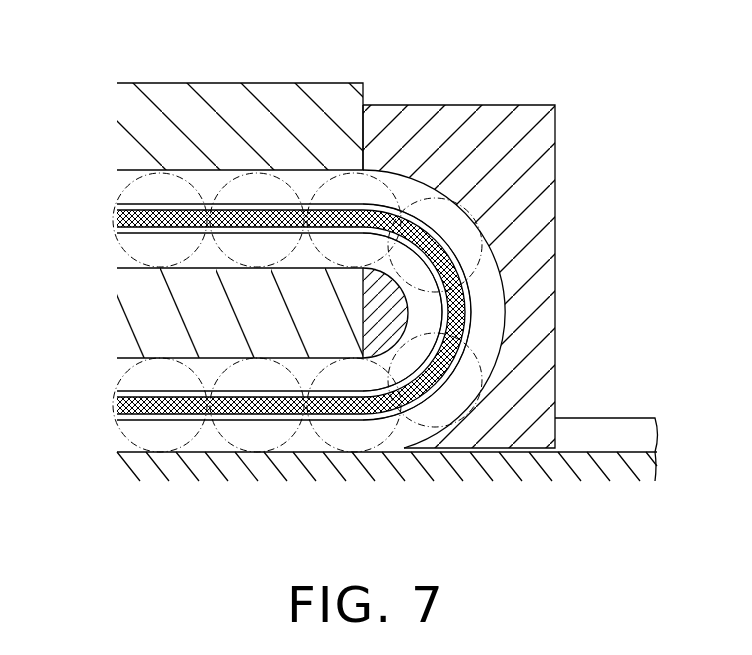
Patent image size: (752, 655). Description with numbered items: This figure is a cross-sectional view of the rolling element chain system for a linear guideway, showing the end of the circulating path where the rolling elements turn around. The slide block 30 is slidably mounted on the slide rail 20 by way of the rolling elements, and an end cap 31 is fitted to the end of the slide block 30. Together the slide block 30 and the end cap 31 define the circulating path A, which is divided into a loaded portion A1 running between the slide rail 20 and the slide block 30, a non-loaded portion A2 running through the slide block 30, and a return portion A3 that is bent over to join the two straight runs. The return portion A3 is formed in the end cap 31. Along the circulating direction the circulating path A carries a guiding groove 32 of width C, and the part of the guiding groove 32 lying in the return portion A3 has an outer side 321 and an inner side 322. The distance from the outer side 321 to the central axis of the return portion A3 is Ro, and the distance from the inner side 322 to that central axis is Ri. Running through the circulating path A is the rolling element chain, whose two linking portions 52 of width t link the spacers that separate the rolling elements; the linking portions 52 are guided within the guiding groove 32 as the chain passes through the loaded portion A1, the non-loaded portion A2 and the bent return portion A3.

The slide rail 20 is at (192, 462).
The slide block 30 is at (175, 95).
The end cap 31 is at (540, 125).
The guiding groove 32 is at (474, 265).
The outer side 321 is at (478, 318).
The inner side 322 is at (317, 268).
The linking portion 52 is at (135, 205).
The circulating path A is at (367, 166).
The loaded portion A1 is at (138, 350).
The non-loaded portion A2 is at (300, 172).
The return portion A3 is at (432, 207).
The outer side distance Ro is at (445, 255).
The inner side distance Ri is at (355, 307).